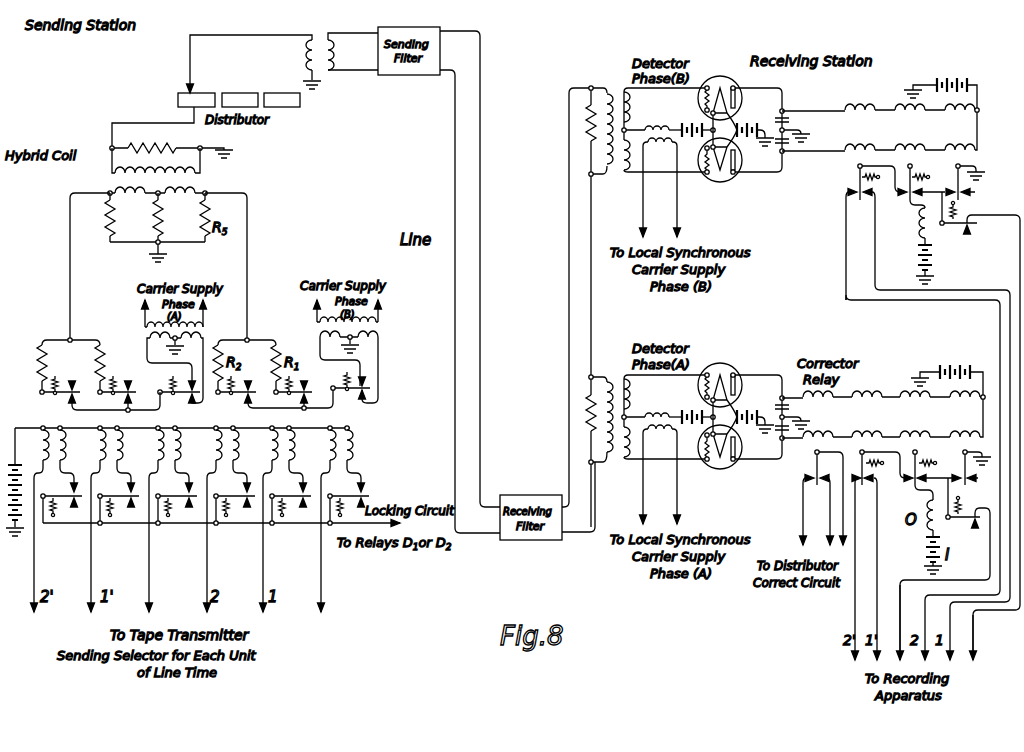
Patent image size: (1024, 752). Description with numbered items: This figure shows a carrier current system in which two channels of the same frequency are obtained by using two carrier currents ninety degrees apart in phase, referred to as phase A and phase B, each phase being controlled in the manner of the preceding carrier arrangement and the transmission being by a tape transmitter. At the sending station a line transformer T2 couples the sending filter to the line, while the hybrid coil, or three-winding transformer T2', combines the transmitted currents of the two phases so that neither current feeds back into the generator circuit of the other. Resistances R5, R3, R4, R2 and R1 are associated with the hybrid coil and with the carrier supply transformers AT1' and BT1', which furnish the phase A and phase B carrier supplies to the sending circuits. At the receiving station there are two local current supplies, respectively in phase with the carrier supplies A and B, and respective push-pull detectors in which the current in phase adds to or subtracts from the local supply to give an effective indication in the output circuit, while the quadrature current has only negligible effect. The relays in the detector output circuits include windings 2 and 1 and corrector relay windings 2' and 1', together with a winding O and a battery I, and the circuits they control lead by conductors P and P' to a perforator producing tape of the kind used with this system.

The line transformer T2 is at (284, 53).
The hybrid coil transformer T2' is at (143, 170).
The resistance R5 is at (152, 139).
The resistance R3 is at (119, 217).
The resistance R4 is at (167, 217).
The resistance R2 is at (68, 366).
The resistance R1 is at (109, 368).
The carrier supply transformer phase A AT1' is at (190, 351).
The carrier supply transformer phase B BT1' is at (363, 351).
The receiving relay coil 2 is at (860, 118).
The receiving relay coil 1 is at (909, 118).
The corrector relay coil 2' is at (867, 407).
The corrector relay coil 1' is at (915, 407).
The relay winding O is at (912, 223).
The battery I is at (930, 264).
The recording lead P is at (967, 637).
The recording lead P' is at (894, 622).